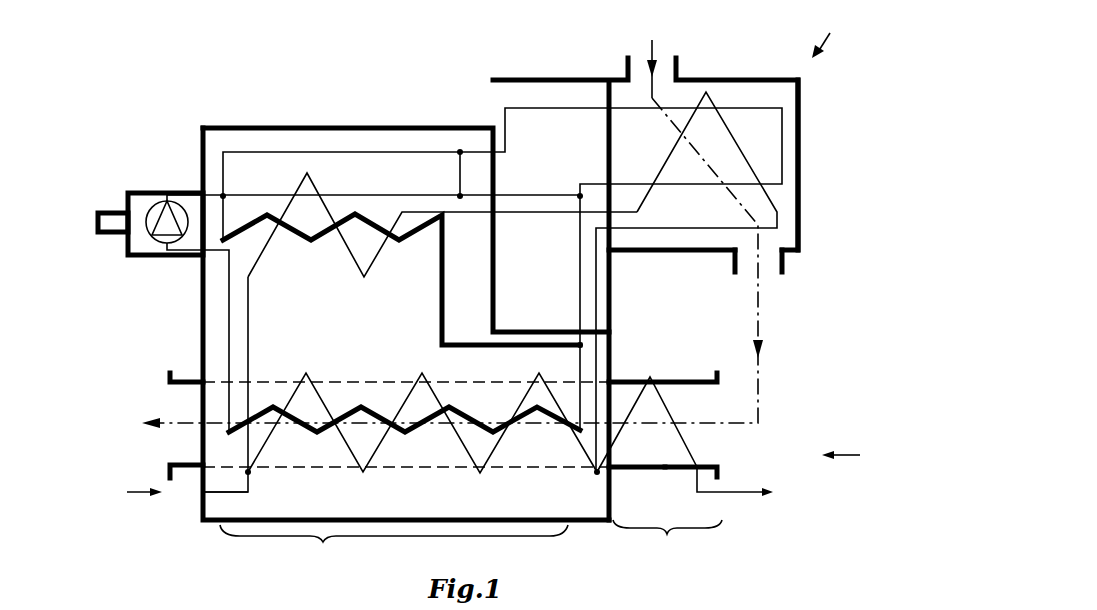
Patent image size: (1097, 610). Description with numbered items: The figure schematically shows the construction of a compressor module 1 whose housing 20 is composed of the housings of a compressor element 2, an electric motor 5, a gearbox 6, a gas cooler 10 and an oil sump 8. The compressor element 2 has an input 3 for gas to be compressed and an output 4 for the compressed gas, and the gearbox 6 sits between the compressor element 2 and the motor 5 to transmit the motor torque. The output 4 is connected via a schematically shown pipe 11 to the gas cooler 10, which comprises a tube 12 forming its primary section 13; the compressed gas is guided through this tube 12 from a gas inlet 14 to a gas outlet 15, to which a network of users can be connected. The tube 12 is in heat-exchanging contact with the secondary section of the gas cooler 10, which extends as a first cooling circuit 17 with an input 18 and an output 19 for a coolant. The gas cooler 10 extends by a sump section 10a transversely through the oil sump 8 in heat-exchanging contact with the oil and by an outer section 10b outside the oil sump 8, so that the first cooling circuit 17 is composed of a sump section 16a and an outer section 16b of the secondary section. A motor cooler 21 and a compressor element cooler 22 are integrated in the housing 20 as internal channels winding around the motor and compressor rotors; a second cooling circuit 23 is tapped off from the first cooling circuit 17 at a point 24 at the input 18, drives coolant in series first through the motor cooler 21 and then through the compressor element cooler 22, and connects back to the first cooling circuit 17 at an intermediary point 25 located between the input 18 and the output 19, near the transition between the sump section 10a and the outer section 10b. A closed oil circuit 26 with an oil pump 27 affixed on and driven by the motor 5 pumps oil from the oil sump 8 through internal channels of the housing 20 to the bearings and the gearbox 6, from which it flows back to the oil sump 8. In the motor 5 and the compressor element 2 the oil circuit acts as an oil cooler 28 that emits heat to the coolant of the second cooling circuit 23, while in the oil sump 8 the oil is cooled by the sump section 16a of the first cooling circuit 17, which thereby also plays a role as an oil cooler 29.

The compressor module 1 is at (827, 32).
The compressor element 2 is at (788, 150).
The input 3 is at (664, 62).
The output 4 is at (770, 265).
The electric motor 5 is at (260, 142).
The gearbox 6 is at (558, 100).
The oil sump 8 is at (213, 510).
The gas cooler 10 is at (858, 456).
The sump section 10a is at (394, 546).
The outer section 10b is at (667, 541).
The pipe 11 is at (760, 322).
The tube 12 is at (632, 467).
The primary section 13 is at (670, 467).
The gas inlet 14 is at (715, 440).
The gas outlet 15 is at (175, 408).
The sump section of the secondary section 16a is at (442, 398).
The outer section of the secondary section 16b is at (670, 410).
The first cooling circuit 17 is at (233, 490).
The input 18 is at (203, 493).
The output 19 is at (697, 468).
The housing 20 is at (800, 205).
The motor cooler 21 is at (322, 196).
The compressor element cooler 22 is at (508, 78).
The second cooling circuit 23 is at (248, 305).
The point 24 is at (246, 470).
The intermediary point 25 is at (597, 476).
The closed oil circuit 26 is at (229, 347).
The oil pump 27 is at (168, 220).
The oil cooler 28 is at (372, 223).
The oil cooler 29 is at (365, 398).